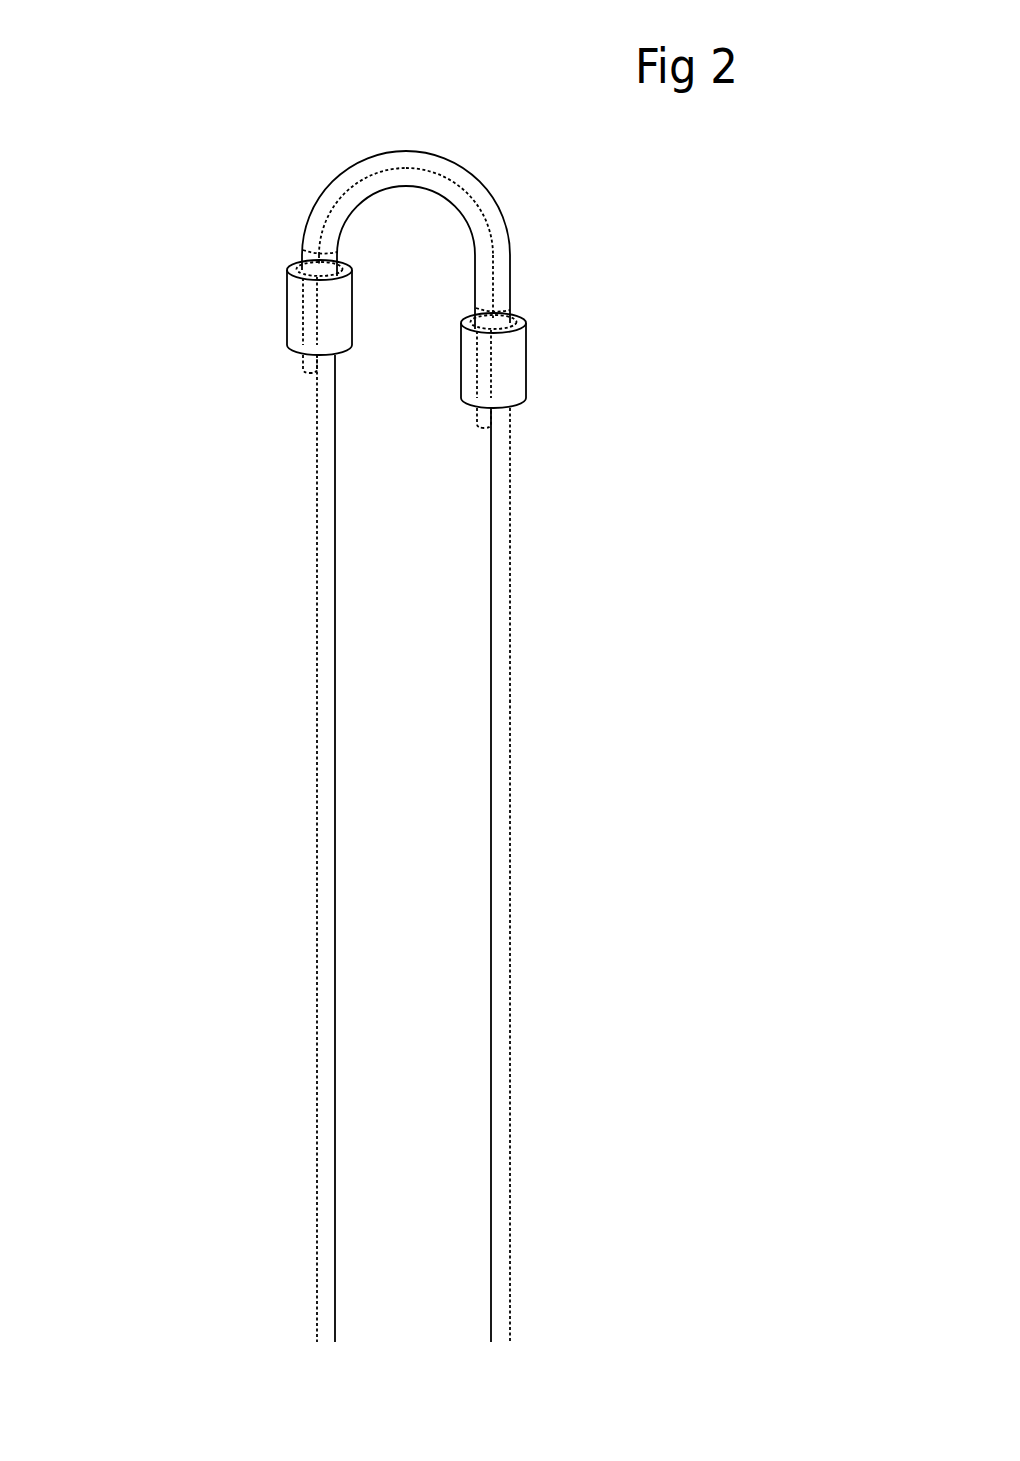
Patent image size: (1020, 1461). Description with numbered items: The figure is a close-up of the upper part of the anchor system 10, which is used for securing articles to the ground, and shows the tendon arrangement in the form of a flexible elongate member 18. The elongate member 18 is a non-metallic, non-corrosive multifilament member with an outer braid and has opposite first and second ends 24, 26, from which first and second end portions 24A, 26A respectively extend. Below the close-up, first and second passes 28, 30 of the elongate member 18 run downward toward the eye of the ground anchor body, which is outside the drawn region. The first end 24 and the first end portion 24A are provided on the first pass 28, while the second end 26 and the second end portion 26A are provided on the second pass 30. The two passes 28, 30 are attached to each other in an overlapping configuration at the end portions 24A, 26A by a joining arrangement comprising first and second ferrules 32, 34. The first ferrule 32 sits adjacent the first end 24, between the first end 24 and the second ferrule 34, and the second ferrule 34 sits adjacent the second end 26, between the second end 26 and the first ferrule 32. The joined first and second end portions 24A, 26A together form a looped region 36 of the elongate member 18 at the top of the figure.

The anchor system 10 is at (245, 675).
The flexible elongate member 18 is at (512, 872).
The first end 24 is at (482, 429).
The first end portion 24A is at (460, 245).
The second end 26 is at (308, 373).
The second end portion 26A is at (328, 180).
The first pass 28 is at (317, 935).
The second pass 30 is at (505, 556).
The first ferrule 32 is at (516, 360).
The second ferrule 34 is at (288, 282).
The looped region 36 is at (415, 158).